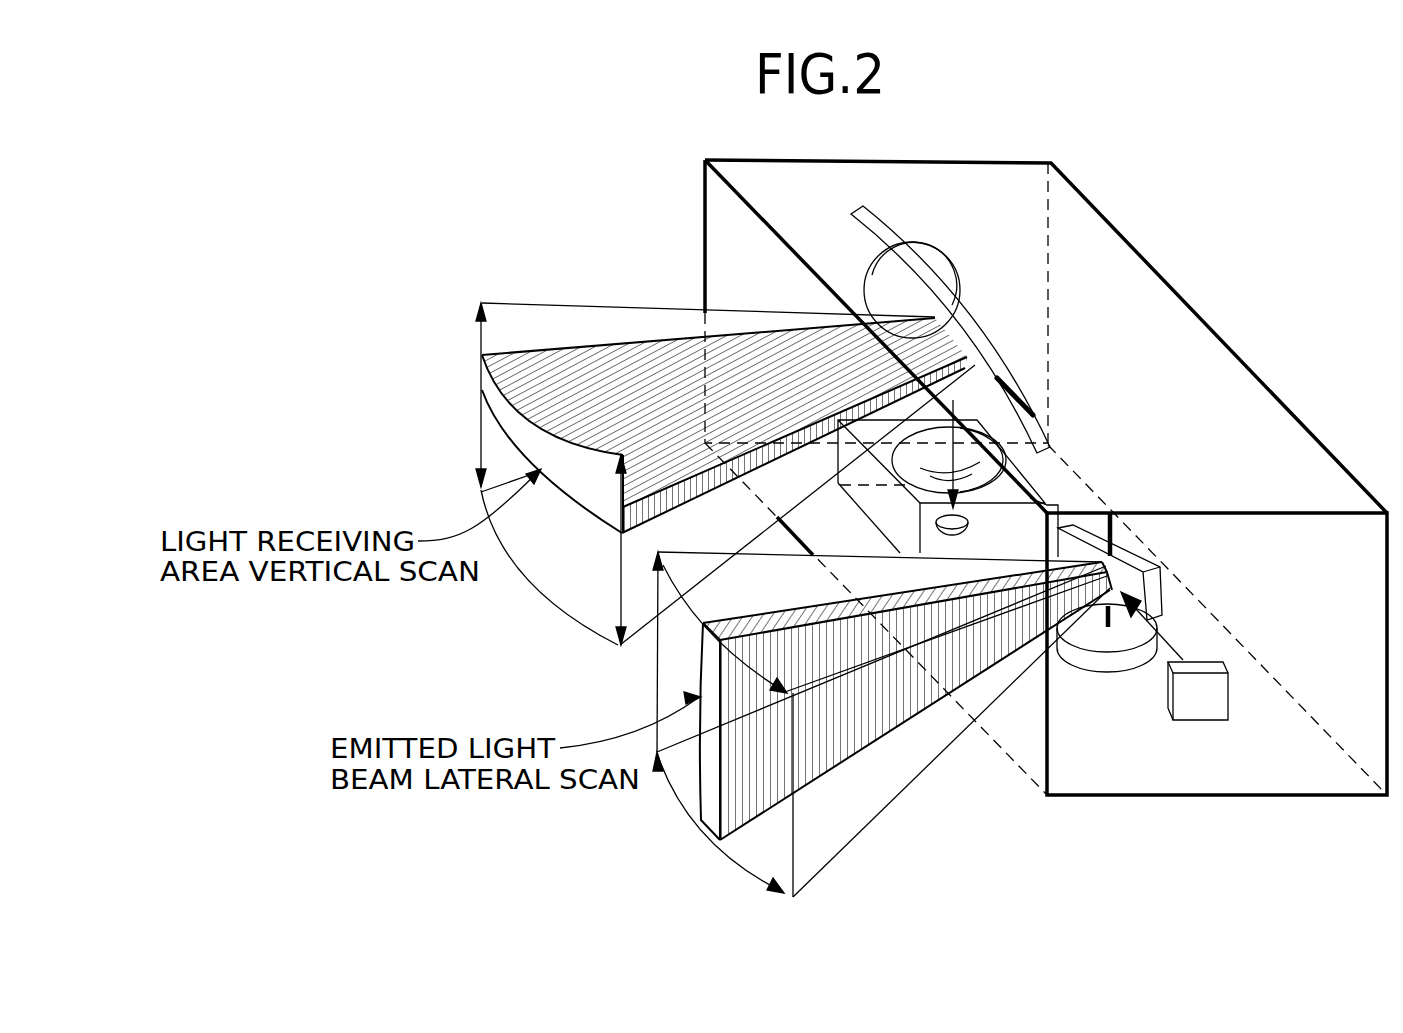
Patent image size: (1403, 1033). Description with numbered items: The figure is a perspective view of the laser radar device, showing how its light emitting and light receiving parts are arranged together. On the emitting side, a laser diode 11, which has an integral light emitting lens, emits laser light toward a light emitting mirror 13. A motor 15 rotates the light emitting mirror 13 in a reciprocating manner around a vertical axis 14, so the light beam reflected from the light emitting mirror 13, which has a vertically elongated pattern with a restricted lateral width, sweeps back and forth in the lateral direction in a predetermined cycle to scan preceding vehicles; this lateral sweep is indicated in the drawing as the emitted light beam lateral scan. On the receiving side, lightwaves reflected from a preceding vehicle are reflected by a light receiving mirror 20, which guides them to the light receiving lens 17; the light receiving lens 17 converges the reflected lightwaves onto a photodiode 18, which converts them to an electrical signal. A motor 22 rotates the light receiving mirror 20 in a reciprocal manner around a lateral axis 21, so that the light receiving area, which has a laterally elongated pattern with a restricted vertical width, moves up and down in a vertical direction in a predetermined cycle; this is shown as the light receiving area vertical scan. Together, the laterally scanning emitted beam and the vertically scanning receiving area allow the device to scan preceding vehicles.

The laser diode 11 is at (1192, 703).
The light emitting mirror 13 is at (1150, 592).
The vertical axis 14 is at (1116, 533).
The motor 15 is at (1102, 663).
The light receiving lens 17 is at (1035, 478).
The photodiode 18 is at (937, 522).
The light receiving mirror 20 is at (877, 232).
The lateral axis 21 is at (1018, 393).
The motor 22 is at (938, 278).